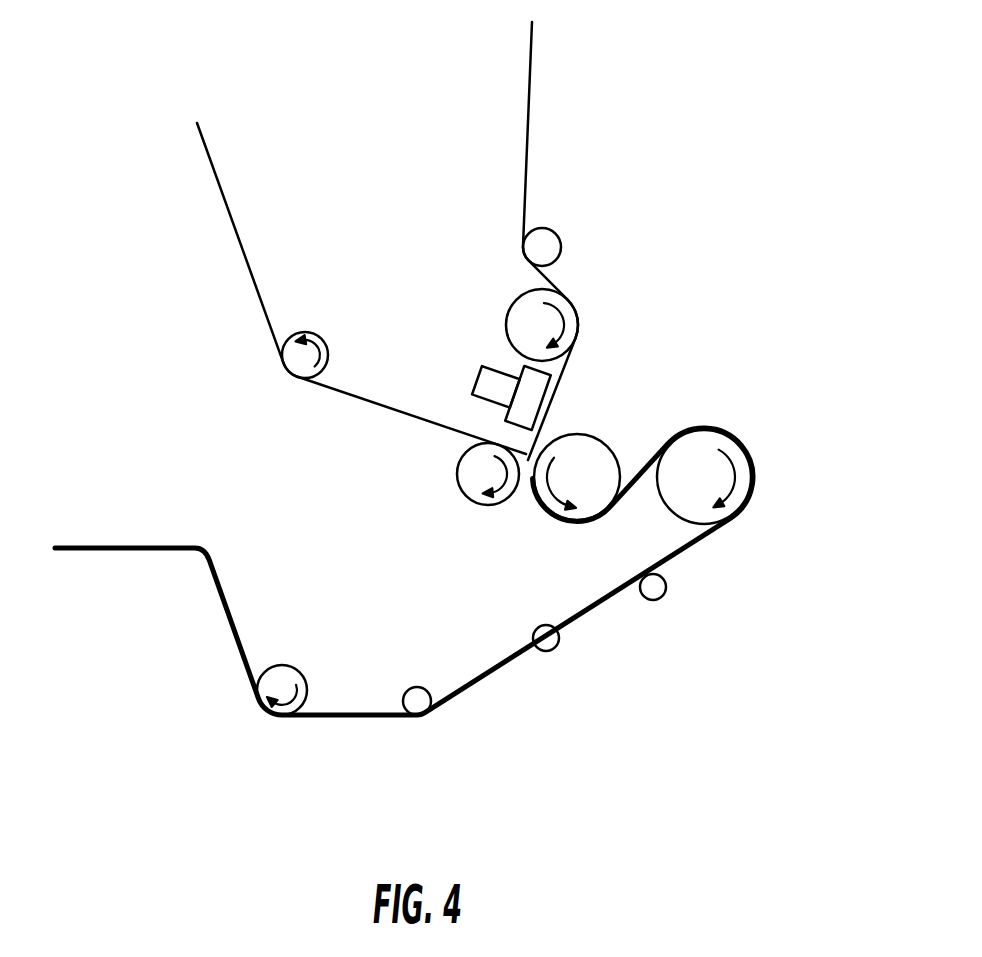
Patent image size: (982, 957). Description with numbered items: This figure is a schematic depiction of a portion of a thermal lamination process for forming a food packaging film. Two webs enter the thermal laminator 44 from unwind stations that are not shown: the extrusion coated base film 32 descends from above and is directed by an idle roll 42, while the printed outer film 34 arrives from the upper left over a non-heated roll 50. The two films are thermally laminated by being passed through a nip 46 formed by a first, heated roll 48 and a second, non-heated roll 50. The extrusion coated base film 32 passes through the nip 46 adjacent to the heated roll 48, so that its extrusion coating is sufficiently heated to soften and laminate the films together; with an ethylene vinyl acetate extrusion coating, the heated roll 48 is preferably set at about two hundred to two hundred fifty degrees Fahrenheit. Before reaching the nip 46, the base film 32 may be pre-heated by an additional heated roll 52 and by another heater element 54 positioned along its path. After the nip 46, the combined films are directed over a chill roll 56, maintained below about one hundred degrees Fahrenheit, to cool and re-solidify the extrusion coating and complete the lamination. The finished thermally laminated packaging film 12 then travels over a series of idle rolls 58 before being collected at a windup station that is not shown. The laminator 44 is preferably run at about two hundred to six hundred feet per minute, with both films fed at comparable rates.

The thermally laminated packaging film 12 is at (700, 540).
The extrusion coated base film 32 is at (528, 130).
The printed outer film 34 is at (218, 193).
The idle roll 42 is at (555, 240).
The thermal laminator 44 is at (777, 322).
The nip 46 is at (520, 503).
The heated roll 48 is at (597, 450).
The non-heated roll 50 is at (282, 367).
The additional heated roll 52 is at (577, 307).
The heater element 54 is at (467, 377).
The chill roll 56 is at (747, 445).
The idle rolls 58 is at (262, 708).